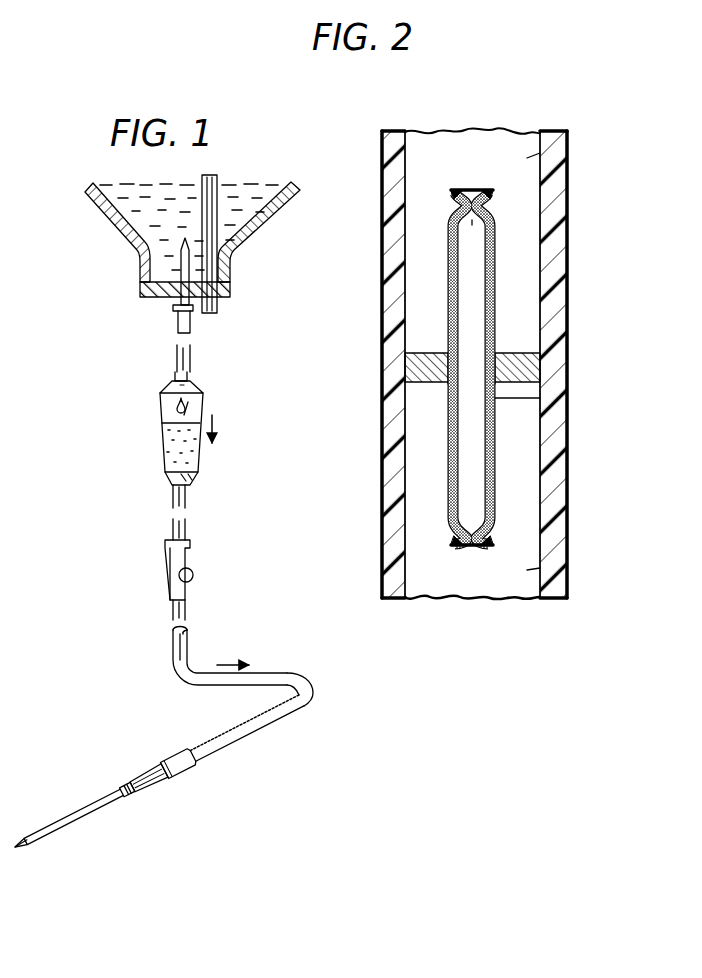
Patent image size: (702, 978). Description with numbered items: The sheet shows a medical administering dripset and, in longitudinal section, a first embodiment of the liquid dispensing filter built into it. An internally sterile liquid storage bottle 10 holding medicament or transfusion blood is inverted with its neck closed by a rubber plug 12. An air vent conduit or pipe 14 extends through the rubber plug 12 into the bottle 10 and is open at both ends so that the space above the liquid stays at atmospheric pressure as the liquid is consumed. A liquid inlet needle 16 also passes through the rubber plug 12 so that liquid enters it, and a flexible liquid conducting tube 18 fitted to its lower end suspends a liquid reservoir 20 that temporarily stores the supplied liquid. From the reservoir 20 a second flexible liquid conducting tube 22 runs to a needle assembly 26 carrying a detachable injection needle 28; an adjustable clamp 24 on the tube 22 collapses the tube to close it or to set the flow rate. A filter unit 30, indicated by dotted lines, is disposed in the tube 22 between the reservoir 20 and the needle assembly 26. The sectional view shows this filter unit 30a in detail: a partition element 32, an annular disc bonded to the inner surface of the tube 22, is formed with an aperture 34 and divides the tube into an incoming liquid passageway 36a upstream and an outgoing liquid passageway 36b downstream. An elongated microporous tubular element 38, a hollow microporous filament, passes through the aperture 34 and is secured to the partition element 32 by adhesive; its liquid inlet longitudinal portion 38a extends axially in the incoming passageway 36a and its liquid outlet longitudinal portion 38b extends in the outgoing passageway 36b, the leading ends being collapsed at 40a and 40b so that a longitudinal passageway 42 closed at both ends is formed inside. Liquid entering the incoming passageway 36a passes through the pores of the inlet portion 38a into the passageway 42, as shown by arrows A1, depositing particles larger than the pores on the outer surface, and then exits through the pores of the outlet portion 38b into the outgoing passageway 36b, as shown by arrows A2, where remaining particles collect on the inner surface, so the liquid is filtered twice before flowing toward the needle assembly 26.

In FIG. 1, the liquid storage bottle 10 is at (121, 240).
In FIG. 1, the rubber plug 12 is at (160, 300).
In FIG. 1, the air vent conduit or pipe 14 is at (217, 182).
In FIG. 1, the liquid inlet needle 16 is at (176, 302).
In FIG. 1, the flexible liquid conducting tube 18 is at (192, 357).
In FIG. 1, the liquid reservoir 20 is at (161, 441).
In FIG. 1, the flexible liquid conducting tube 22 is at (187, 524).
In FIG. 2, the flexible liquid conducting tube 22 is at (568, 278).
In FIG. 1, the adjustable clamp 24 is at (170, 576).
In FIG. 1, the needle assembly 26 is at (184, 772).
In FIG. 1, the detachable injection needle 28 is at (91, 812).
In FIG. 1, the filter unit 30 is at (313, 690).
In FIG. 2, the filter unit 30a is at (432, 338).
In FIG. 2, the partition element 32 is at (420, 384).
In FIG. 2, the aperture 34 is at (452, 385).
In FIG. 2, the incoming liquid passageway 36a is at (527, 158).
In FIG. 2, the outgoing liquid passageway 36b is at (527, 570).
In FIG. 2, the microporous tubular element 38 is at (472, 183).
In FIG. 2, the liquid inlet longitudinal portion 38a is at (496, 338).
In FIG. 2, the liquid outlet longitudinal portion 38b is at (540, 398).
In FIG. 2, the collapsed end 40a is at (453, 206).
In FIG. 2, the collapsed end 40b is at (488, 543).
In FIG. 2, the longitudinal passageway 42 is at (479, 230).
In FIG. 2, the arrows A1 is at (470, 370).
In FIG. 2, the arrows A2 is at (434, 540).